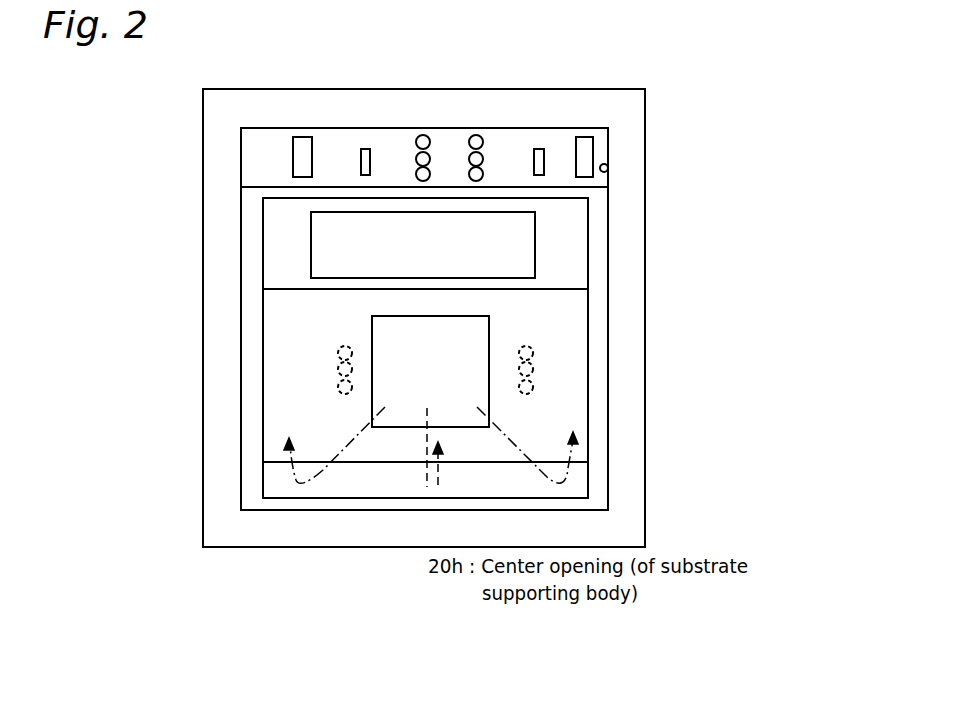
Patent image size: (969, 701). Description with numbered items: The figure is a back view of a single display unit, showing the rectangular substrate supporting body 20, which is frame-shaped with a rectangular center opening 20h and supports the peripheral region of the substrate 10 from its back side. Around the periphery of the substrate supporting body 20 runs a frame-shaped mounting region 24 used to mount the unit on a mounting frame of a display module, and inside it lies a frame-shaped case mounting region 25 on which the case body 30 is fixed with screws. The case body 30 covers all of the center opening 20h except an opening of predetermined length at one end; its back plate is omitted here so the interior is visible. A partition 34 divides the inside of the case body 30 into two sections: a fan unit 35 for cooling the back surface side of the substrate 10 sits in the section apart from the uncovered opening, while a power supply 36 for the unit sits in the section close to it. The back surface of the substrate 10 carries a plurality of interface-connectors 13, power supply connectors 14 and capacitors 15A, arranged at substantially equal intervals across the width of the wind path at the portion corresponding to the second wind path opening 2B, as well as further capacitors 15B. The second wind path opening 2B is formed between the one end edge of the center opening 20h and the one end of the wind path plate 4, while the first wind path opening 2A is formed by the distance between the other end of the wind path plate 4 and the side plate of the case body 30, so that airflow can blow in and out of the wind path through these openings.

The substrate supporting body 20 is at (648, 103).
The center opening 20h is at (608, 170).
The substrate 10 is at (386, 140).
The interface-connectors 13 is at (293, 150).
The power supply connectors 14 is at (365, 140).
The capacitors 15A is at (475, 135).
The capacitors 15B is at (337, 356).
The second wind path opening 2B is at (515, 155).
The first wind path opening 2A is at (384, 477).
The case body 30 is at (263, 302).
The partition 34 is at (563, 289).
The power supply 36 is at (311, 248).
The fan unit 35 is at (372, 402).
The wind path plate 4 is at (568, 378).
The mounting region 24 is at (628, 425).
The case mounting region 25 is at (598, 483).